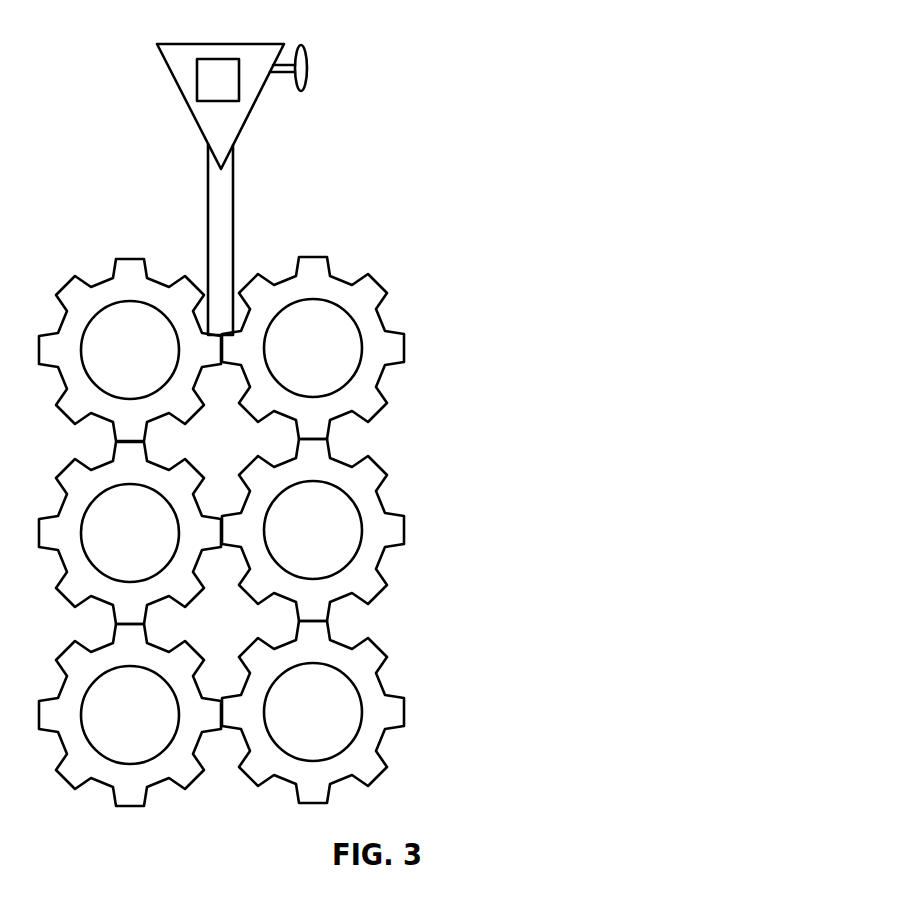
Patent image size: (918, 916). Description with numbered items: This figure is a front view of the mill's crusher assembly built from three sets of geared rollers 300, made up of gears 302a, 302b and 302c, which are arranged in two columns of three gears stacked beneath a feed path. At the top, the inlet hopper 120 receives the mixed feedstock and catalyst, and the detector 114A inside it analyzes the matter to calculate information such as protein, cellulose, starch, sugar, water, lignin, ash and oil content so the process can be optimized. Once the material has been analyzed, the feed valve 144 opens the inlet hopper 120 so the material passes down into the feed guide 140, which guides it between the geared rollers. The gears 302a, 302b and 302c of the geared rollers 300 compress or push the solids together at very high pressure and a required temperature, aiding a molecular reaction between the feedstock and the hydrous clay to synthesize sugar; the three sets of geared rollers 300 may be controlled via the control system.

The detector 114A is at (197, 87).
The inlet hopper 120 is at (238, 141).
The feed guide 140 is at (208, 193).
The feed valve 144 is at (307, 53).
The three set geared rollers 300 is at (320, 493).
The gear 302a is at (313, 257).
The gear 302b is at (405, 528).
The gear 302c is at (374, 712).